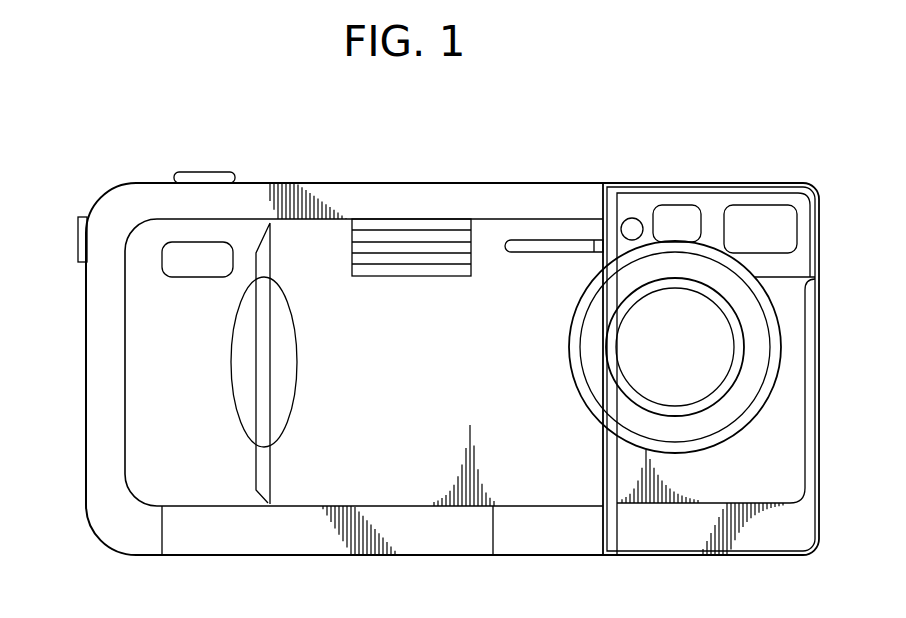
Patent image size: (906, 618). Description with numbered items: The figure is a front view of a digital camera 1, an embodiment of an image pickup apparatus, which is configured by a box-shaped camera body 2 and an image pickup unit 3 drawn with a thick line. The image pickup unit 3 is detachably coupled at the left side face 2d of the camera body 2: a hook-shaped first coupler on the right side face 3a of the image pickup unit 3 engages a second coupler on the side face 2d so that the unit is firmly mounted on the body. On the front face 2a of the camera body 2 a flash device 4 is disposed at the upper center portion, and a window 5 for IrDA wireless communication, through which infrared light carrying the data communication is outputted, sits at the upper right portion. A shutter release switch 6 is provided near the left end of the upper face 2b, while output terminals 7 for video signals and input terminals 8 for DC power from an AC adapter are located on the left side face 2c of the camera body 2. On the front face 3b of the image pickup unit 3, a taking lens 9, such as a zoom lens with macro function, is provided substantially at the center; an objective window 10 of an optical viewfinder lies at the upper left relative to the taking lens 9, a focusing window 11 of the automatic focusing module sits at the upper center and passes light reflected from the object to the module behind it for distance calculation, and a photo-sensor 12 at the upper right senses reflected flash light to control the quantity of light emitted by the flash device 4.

The digital camera 1 is at (398, 172).
The camera body 2 is at (335, 183).
The front face of the camera body 2a is at (200, 493).
The upper face of the camera body 2b is at (148, 183).
The left side face of the camera body 2c is at (86, 330).
The left side face of the camera body 2d is at (604, 557).
The image pickup unit 3 is at (737, 183).
The right side face of the image pickup unit 3a is at (606, 557).
The front face of the image pickup unit 3b is at (793, 380).
The flash device 4 is at (438, 278).
The window for IrDA wireless communication 5 is at (220, 270).
The shutter release switch 6 is at (210, 173).
The output terminals 7 is at (79, 240).
The input terminals 8 is at (554, 246).
The taking lens 9 is at (722, 438).
The objective window of an optical viewfinder 10 is at (769, 205).
The focusing window 11 is at (677, 205).
The photo-sensor 12 is at (632, 218).